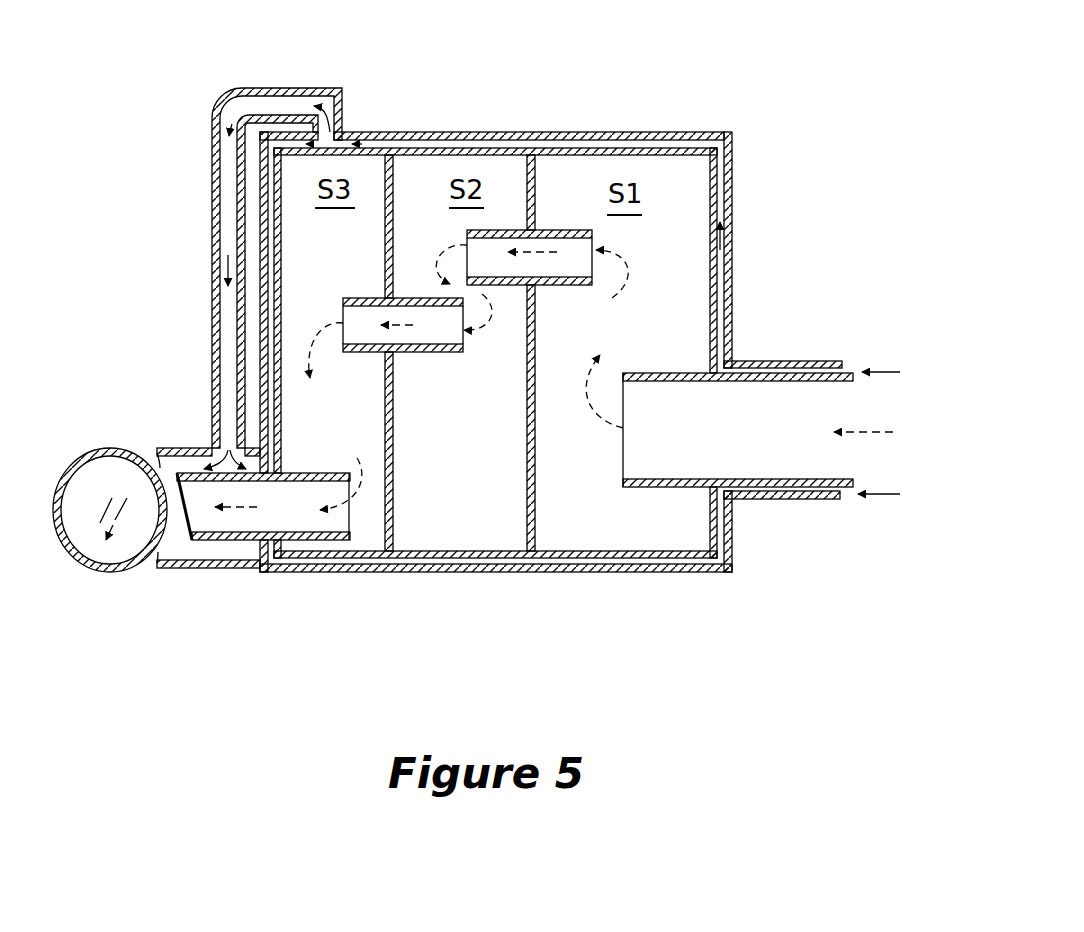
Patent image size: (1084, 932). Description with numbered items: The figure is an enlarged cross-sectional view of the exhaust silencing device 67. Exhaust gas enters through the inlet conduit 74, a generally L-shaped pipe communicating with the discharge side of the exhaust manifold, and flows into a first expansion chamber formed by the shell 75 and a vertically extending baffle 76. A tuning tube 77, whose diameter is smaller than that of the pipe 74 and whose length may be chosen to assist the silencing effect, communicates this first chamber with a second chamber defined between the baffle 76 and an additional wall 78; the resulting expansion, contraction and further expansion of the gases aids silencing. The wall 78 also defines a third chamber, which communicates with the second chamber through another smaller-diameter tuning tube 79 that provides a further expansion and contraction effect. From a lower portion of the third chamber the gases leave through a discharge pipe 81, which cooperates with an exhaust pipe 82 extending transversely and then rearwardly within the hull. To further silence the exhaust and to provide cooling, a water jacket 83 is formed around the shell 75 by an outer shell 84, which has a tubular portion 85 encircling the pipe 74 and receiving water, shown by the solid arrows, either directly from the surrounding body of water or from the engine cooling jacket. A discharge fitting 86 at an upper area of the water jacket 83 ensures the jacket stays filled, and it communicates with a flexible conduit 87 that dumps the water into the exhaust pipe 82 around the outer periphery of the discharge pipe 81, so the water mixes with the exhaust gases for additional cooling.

The exhaust silencing device 67 is at (676, 125).
The inlet conduit 74 is at (793, 499).
The shell 75 is at (572, 148).
The baffle 76 is at (535, 527).
The tuning tube 77 is at (568, 287).
The wall 78 is at (393, 463).
The tuning tube 79 is at (443, 352).
The discharge pipe 81 is at (269, 474).
The exhaust pipe 82 is at (195, 572).
The water jacket 83 is at (720, 173).
The outer shell 84 is at (732, 285).
The tubular portion 85 is at (770, 361).
The discharge fitting 86 is at (330, 92).
The flexible conduit 87 is at (212, 283).